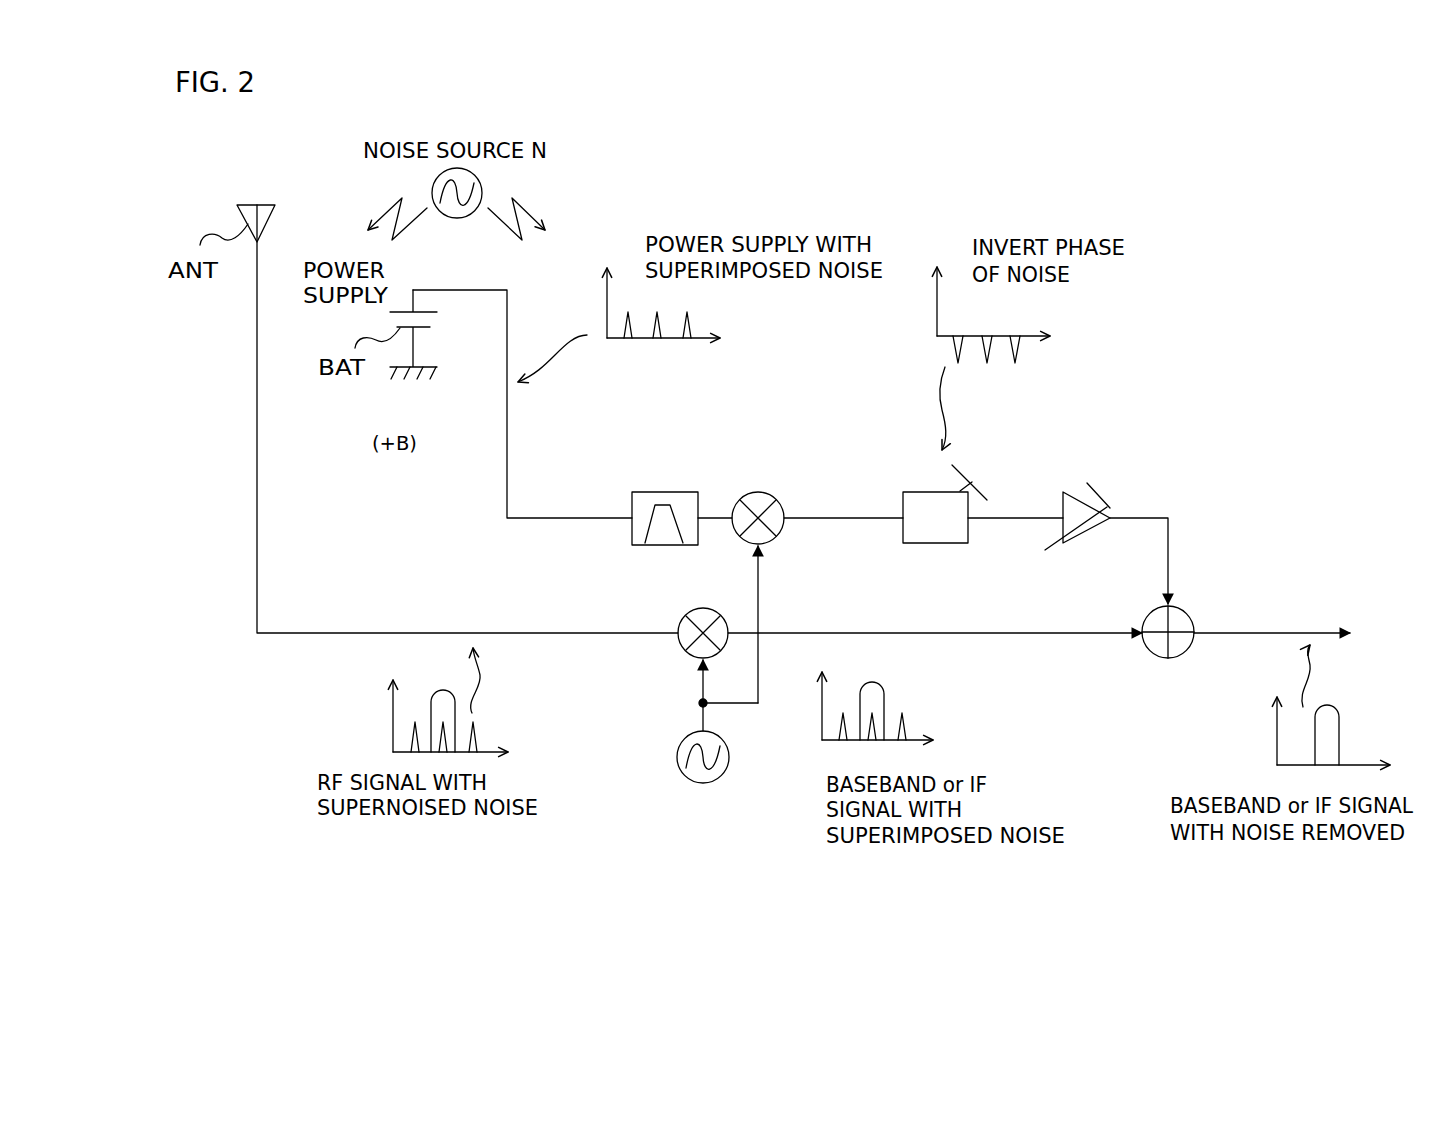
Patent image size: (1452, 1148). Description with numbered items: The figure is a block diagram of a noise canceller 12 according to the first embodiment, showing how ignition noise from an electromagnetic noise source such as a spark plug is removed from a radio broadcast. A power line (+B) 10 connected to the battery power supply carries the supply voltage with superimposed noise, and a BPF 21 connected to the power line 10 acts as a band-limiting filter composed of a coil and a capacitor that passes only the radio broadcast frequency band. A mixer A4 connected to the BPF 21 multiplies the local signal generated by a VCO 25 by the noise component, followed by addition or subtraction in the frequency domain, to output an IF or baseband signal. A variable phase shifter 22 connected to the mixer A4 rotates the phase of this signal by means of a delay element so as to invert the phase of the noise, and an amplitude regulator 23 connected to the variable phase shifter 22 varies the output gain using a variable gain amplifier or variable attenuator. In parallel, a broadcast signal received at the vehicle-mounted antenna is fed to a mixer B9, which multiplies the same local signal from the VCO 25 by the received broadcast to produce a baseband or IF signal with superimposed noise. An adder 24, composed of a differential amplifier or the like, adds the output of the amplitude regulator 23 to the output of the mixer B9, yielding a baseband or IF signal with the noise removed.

The power line (+B) 10 is at (552, 520).
The noise canceller 12 is at (523, 865).
The BPF 21 is at (631, 492).
The mixer A4 is at (764, 494).
The variable phase shifter 22 is at (905, 492).
The amplitude regulator 23 is at (1062, 488).
The adder 24 is at (1170, 655).
The mixer B9 is at (684, 614).
The VCO 25 is at (682, 740).